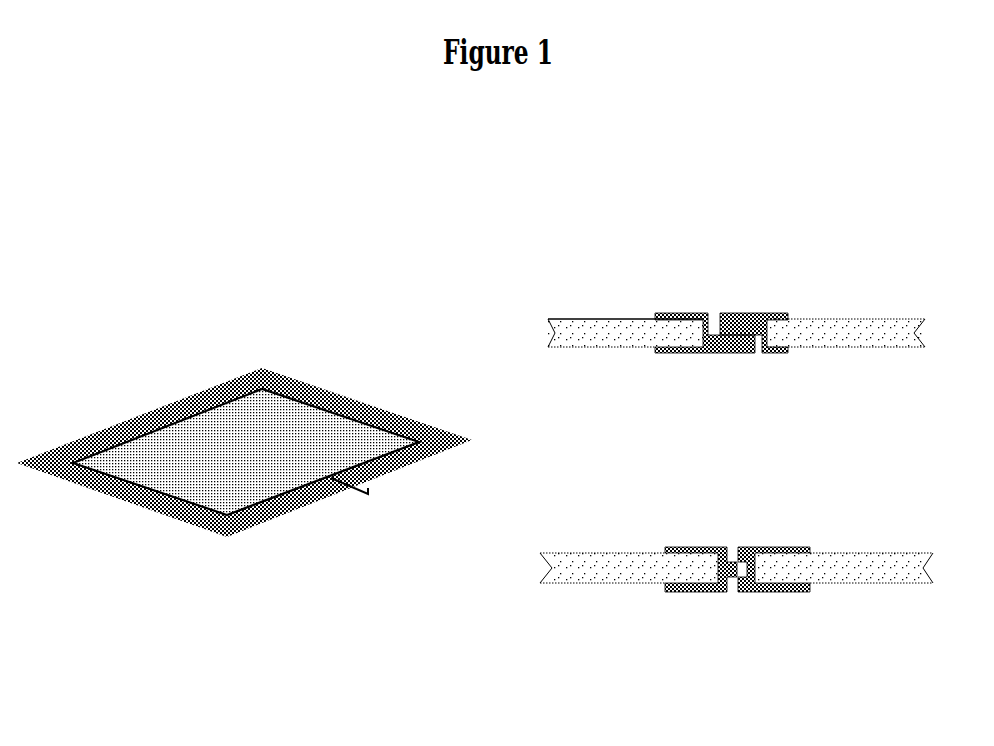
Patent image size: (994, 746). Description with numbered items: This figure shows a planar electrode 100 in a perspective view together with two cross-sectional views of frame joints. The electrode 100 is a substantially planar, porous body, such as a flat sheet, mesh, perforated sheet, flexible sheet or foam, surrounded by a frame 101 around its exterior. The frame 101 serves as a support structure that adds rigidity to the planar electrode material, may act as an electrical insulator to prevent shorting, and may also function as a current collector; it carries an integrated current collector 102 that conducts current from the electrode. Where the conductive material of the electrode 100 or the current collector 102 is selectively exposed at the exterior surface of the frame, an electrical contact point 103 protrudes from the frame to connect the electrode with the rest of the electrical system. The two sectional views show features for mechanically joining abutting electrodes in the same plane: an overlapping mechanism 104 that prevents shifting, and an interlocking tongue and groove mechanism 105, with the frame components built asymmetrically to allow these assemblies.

The planar electrode 100 is at (475, 451).
The frame 101 is at (447, 435).
The integrated current collector 102 is at (190, 508).
The electrical contact point 103 is at (372, 487).
The overlapping mechanism 104 is at (780, 355).
The tongue and groove mechanism 105 is at (770, 592).